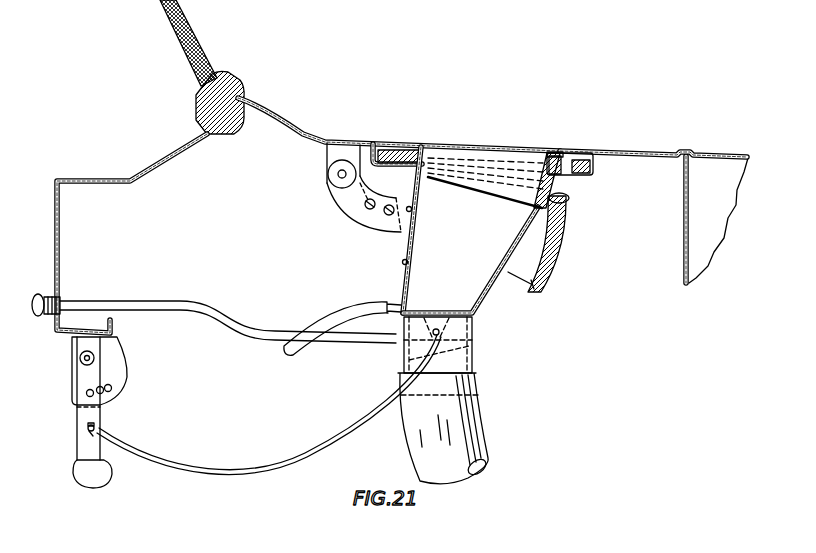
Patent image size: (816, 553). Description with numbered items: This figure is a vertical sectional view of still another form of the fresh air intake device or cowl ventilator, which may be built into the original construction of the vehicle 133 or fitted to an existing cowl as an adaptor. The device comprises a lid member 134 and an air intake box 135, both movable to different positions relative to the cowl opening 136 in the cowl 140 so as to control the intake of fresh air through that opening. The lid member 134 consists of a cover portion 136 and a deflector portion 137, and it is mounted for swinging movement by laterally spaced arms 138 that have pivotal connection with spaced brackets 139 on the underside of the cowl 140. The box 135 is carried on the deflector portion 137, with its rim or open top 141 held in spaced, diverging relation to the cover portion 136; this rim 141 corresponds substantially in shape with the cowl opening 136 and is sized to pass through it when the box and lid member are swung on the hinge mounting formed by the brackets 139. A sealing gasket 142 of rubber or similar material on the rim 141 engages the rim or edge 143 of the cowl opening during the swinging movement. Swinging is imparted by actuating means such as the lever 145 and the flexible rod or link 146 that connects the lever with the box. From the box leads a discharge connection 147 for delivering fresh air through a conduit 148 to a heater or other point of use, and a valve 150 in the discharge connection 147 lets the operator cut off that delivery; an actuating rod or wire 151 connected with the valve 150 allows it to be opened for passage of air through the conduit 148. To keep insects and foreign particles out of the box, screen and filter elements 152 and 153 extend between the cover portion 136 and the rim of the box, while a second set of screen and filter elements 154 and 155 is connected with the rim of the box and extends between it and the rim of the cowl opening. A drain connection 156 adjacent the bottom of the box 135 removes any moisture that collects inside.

The vehicle 133 is at (622, 154).
The lid member 134 is at (505, 131).
The air intake box 135 is at (497, 296).
The cowl opening 136 is at (459, 131).
The deflector portion 137 is at (421, 221).
The laterally spaced arms 138 is at (362, 217).
The brackets 139 is at (333, 160).
The cowl 140 is at (305, 136).
The rim or open top 141 is at (650, 216).
The sealing gasket 142 is at (640, 251).
The rim or edge of cowl opening 143 is at (591, 176).
The lever 145 is at (85, 445).
The flexible rod or link 146 is at (305, 456).
The discharge connection 147 is at (473, 364).
The conduit 148 is at (481, 438).
The valve 150 is at (473, 340).
The actuating rod or wire 151 is at (392, 345).
The screen element 152 is at (567, 163).
The filter element 153 is at (545, 160).
The screen element 154 is at (551, 273).
The filter element 155 is at (536, 292).
The drain connection 156 is at (354, 301).